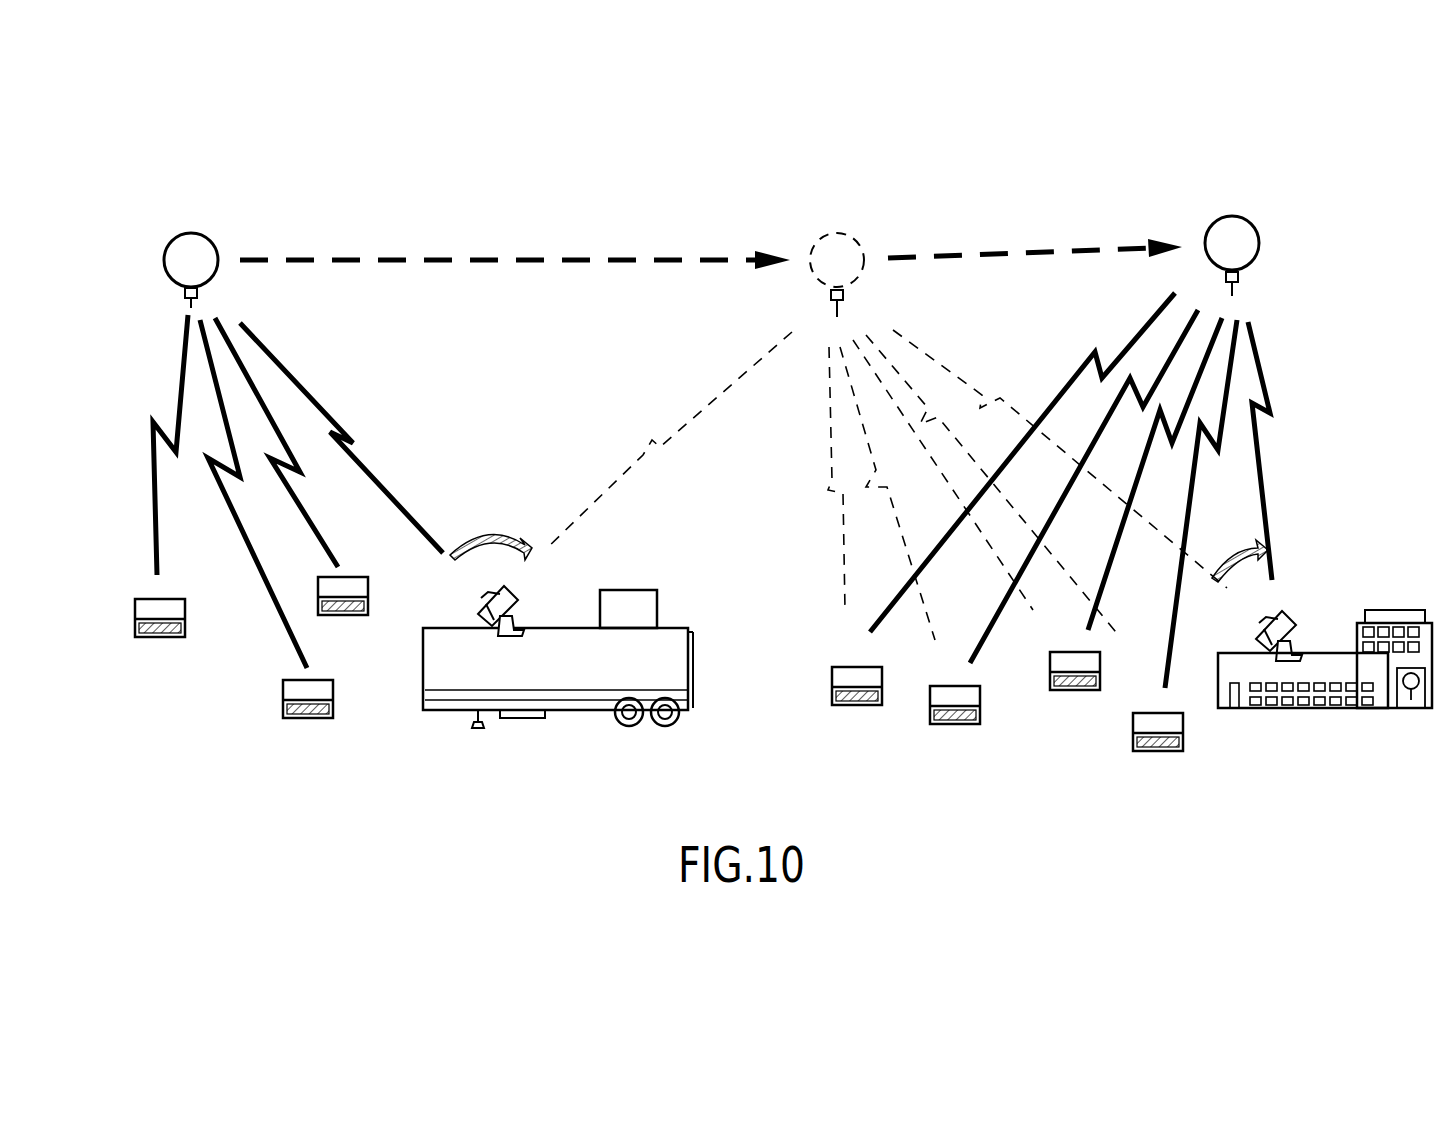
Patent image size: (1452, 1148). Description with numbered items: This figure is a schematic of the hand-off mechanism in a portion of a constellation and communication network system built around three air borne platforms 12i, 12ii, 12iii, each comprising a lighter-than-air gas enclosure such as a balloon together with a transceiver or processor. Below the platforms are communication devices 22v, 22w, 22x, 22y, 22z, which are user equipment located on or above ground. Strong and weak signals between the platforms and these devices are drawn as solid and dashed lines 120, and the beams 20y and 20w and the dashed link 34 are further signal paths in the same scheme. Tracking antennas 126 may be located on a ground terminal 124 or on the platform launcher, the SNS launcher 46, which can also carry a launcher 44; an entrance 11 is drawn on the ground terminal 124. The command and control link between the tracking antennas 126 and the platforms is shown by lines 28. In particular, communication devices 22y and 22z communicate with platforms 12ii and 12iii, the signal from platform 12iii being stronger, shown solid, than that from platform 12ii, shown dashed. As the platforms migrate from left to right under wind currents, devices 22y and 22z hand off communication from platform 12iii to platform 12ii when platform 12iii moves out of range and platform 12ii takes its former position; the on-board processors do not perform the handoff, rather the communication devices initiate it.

The air borne platform 12i is at (218, 226).
The air borne platform 12ii is at (856, 224).
The air borne platform 12iii is at (1262, 210).
The command and control link lines 28 is at (295, 378).
The communication link beam 20y is at (162, 510).
The communication link beam 20w is at (250, 565).
The inter-platform/ground link 34 is at (725, 380).
The signal lines 120 is at (1135, 332).
The communication device 22v is at (158, 640).
The communication device 22w is at (305, 720).
The communication device 22x is at (343, 617).
The communication device 22y is at (862, 705).
The communication device 22z is at (955, 725).
The tracking antenna 126 is at (477, 614).
The launcher 44 is at (658, 605).
The SNS launcher 46 is at (572, 680).
The ground terminal 124 is at (1258, 710).
The ground station entrance 11 is at (1405, 710).